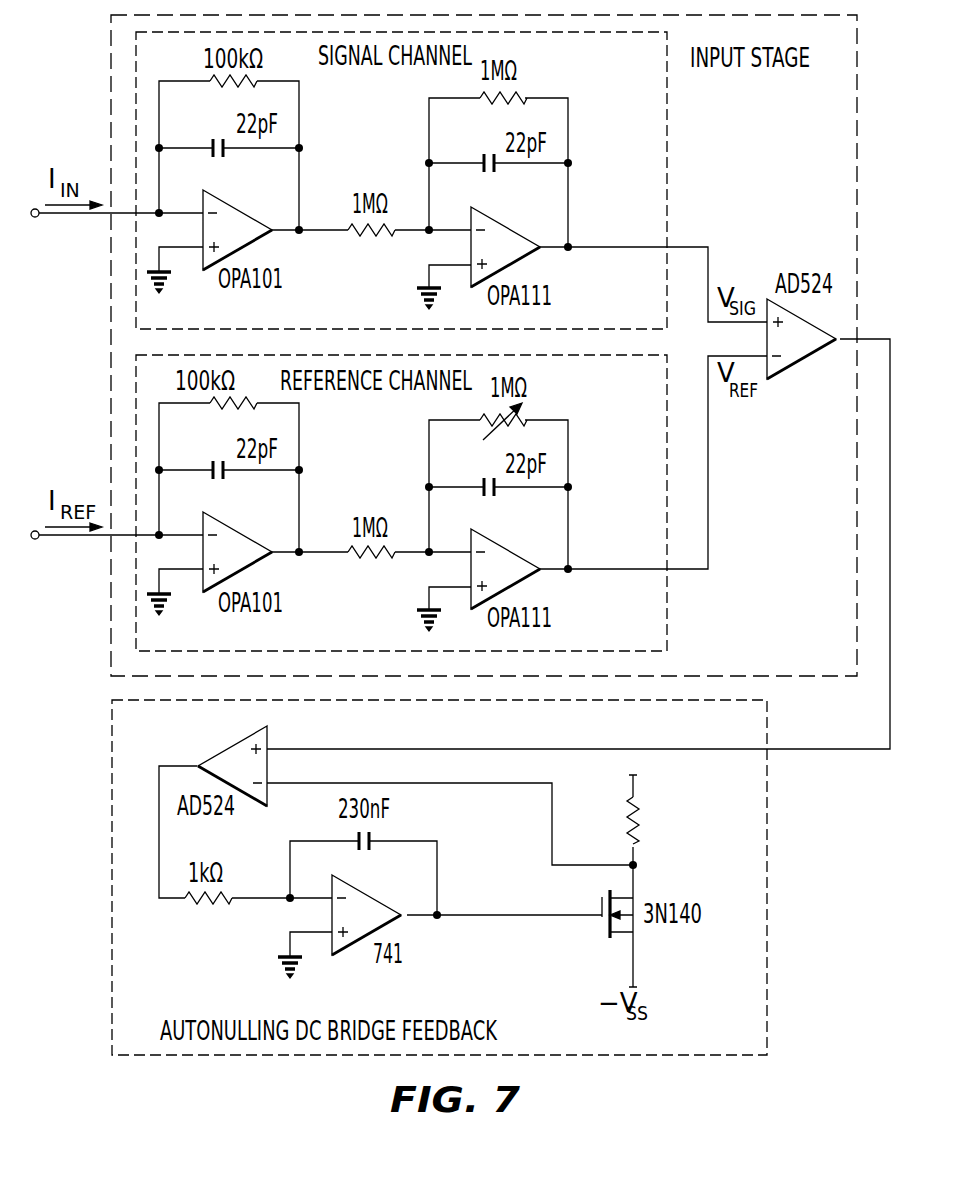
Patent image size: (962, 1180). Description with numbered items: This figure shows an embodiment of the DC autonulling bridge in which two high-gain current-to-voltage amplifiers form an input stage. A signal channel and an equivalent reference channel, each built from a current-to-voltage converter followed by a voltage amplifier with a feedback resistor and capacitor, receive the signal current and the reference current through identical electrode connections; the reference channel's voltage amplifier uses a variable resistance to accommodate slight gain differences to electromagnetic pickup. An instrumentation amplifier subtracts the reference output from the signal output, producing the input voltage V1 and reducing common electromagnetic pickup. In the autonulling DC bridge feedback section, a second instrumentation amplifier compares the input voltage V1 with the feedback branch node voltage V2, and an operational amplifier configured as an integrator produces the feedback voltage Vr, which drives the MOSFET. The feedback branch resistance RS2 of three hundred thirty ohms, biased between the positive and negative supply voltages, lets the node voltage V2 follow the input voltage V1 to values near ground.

The input voltage V1 is at (578, 527).
The feedback branch node voltage V2 is at (646, 868).
The feedback voltage Vr is at (504, 898).
The feedback branch resistance RS2 is at (689, 812).